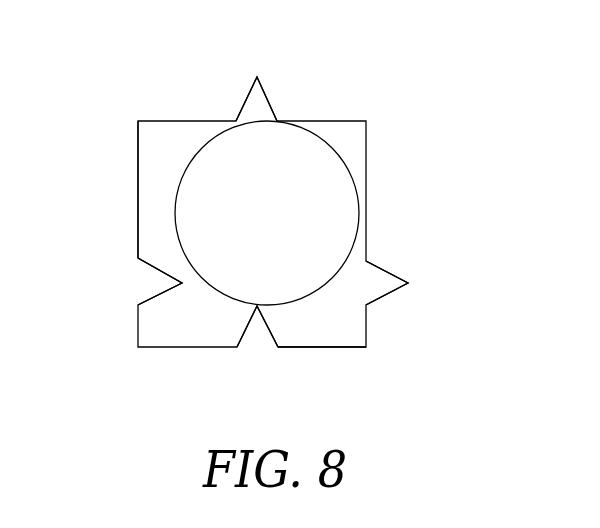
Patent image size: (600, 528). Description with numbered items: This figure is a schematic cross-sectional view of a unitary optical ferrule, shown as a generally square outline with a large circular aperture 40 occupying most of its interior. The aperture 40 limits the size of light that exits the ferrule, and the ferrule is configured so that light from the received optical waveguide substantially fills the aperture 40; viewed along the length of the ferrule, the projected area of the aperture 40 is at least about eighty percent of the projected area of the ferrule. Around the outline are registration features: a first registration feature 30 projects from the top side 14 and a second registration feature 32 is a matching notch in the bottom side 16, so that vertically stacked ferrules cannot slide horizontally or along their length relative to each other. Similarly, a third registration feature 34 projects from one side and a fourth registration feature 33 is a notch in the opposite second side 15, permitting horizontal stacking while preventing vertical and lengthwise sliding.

The top side 14 is at (366, 166).
The second side 15 is at (138, 212).
The bottom side 16 is at (327, 347).
The first registration feature 30 is at (266, 93).
The second registration feature 32 is at (245, 332).
The fourth registration feature 33 is at (150, 298).
The third registration feature 34 is at (388, 293).
The aperture 40 is at (288, 221).